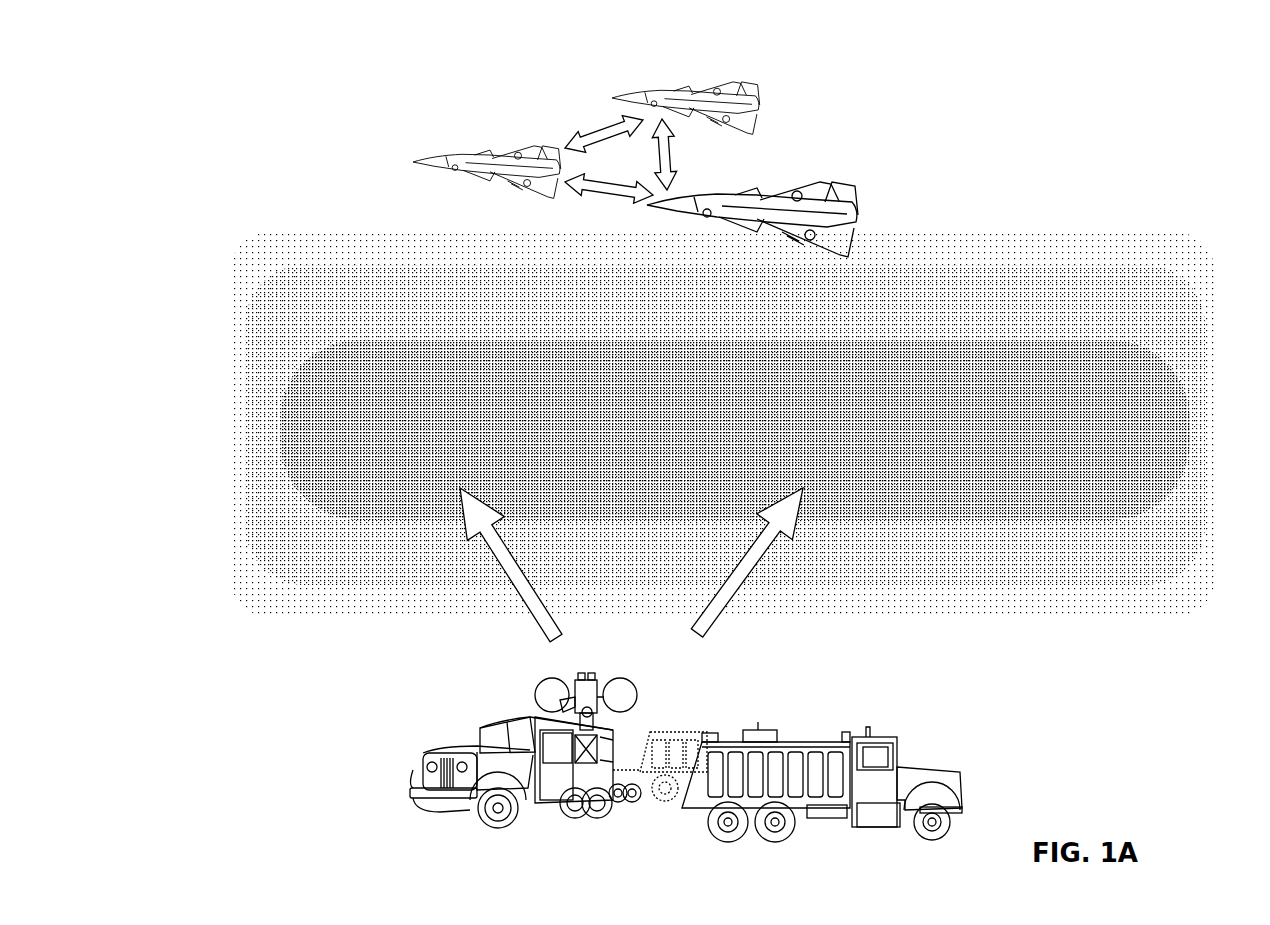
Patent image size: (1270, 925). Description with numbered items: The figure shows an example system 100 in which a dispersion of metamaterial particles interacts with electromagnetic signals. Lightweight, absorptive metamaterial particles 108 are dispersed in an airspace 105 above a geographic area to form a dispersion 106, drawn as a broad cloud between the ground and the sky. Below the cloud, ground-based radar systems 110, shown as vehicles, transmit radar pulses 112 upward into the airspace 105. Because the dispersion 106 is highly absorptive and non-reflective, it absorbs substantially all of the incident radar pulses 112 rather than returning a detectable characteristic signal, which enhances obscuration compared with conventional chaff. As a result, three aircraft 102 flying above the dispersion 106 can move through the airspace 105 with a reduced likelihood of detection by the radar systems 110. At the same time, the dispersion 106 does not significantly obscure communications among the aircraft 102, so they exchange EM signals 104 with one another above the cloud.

The system 100 is at (198, 58).
The aircraft 102 is at (460, 152).
The EM signals 104 is at (598, 130).
The airspace 105 is at (1047, 203).
The dispersion 106 is at (203, 385).
The metamaterial particles 108 is at (288, 250).
The radar systems 110 is at (402, 712).
The radar pulses 112 is at (517, 590).